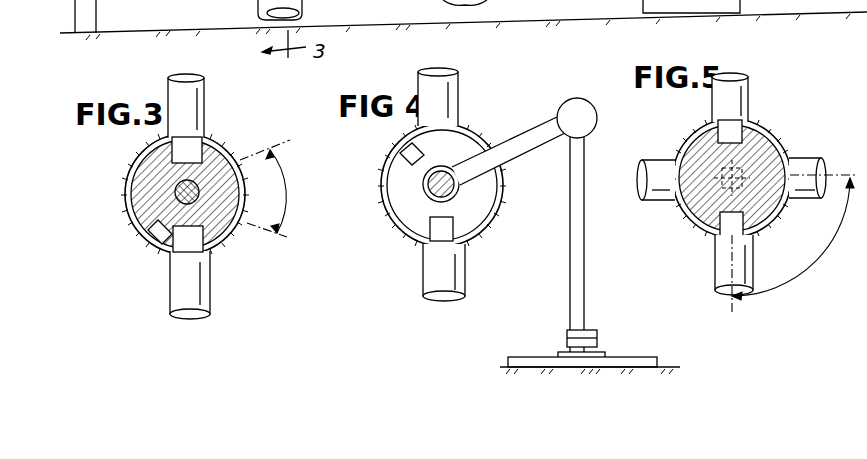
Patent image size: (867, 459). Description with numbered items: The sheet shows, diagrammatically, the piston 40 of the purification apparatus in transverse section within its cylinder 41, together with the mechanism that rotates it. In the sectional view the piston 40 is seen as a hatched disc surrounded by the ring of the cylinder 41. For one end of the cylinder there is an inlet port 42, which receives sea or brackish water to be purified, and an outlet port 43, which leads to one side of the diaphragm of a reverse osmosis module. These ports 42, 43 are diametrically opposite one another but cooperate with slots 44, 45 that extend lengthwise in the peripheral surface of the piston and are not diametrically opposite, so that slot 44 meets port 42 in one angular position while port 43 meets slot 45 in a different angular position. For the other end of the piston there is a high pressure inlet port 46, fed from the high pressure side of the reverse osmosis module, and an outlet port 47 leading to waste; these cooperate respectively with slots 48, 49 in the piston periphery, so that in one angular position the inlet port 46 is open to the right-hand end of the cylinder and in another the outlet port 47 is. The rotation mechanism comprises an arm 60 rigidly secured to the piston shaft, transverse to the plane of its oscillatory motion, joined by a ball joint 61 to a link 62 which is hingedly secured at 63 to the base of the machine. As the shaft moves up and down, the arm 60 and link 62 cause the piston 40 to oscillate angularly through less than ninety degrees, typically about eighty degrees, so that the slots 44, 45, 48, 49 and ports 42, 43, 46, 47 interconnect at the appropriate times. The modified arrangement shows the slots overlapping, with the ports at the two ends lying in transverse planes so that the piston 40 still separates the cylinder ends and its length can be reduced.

In FIG. 3, the piston 40 is at (142, 185).
In FIG. 4, the piston 40 is at (395, 192).
In FIG. 5, the piston 40 is at (690, 217).
In FIG. 3, the cylinder 41 is at (228, 237).
In FIG. 4, the cylinder 41 is at (485, 223).
In FIG. 5, the cylinder 41 is at (698, 131).
In FIG. 3, the inlet port 42 is at (192, 260).
In FIG. 5, the inlet port 42 is at (652, 168).
In FIG. 3, the outlet port 43 is at (190, 126).
In FIG. 5, the outlet port 43 is at (737, 100).
In FIG. 3, the slot 44 is at (155, 232).
In FIG. 3, the slot 45 is at (192, 150).
In FIG. 5, the slot 45 is at (732, 133).
In FIG. 4, the high pressure inlet port 46 is at (433, 278).
In FIG. 5, the high pressure inlet port 46 is at (752, 257).
In FIG. 4, the outlet port 47 is at (452, 108).
In FIG. 5, the outlet port 47 is at (802, 167).
In FIG. 4, the slot 48 is at (435, 227).
In FIG. 5, the slot 48 is at (760, 223).
In FIG. 4, the slot 49 is at (400, 150).
In FIG. 4, the arm 60 is at (530, 140).
In FIG. 4, the ball joint 61 is at (567, 105).
In FIG. 4, the link 62 is at (577, 269).
In FIG. 4, the hinge 63 is at (567, 343).